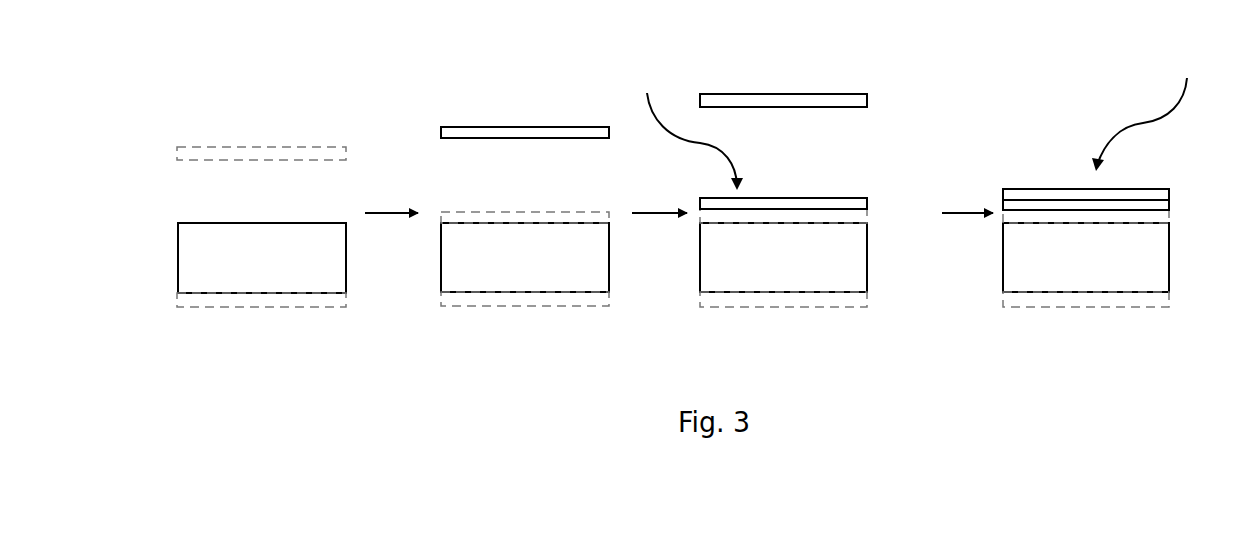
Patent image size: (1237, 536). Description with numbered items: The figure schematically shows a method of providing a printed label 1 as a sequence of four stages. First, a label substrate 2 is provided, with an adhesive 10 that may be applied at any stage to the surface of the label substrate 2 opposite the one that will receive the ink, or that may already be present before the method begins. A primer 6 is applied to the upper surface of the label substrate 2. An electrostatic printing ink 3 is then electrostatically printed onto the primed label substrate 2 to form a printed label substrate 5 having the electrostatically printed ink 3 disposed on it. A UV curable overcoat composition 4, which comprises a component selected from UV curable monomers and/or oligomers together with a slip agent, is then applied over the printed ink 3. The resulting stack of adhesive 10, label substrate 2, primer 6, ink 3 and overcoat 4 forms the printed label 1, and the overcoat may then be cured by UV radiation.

The printed label 1 is at (1154, 110).
The label substrate 2 is at (673, 258).
The electrostatic printing ink 3 is at (453, 127).
The UV curable overcoat composition 4 is at (867, 98).
The printed label substrate 5 is at (691, 130).
The primer 6 is at (228, 148).
The adhesive 10 is at (346, 297).